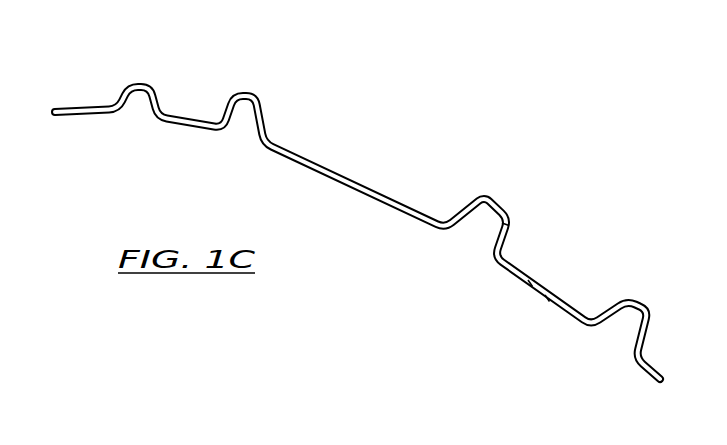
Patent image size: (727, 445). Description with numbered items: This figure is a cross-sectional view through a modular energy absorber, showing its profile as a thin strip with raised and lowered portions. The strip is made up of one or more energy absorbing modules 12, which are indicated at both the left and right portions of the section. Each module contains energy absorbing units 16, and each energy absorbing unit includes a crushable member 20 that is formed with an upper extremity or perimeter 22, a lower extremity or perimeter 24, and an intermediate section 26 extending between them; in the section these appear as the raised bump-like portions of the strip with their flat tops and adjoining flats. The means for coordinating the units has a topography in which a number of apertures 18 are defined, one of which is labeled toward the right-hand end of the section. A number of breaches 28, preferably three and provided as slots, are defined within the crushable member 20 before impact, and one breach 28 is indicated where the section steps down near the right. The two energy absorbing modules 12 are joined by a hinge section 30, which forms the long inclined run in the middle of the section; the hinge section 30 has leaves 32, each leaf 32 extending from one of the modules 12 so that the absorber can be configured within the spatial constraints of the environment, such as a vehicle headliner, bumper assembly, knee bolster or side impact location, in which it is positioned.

The energy absorbing module 12 is at (197, 160).
The energy absorbing unit 16 is at (266, 122).
The aperture 18 is at (546, 278).
The crushable member 20 is at (507, 187).
The upper extremity 22 is at (154, 91).
The lower extremity 24 is at (117, 106).
The intermediate section 26 is at (159, 107).
The breach 28 is at (511, 240).
The hinge section 30 is at (362, 178).
The leaf 32 is at (386, 202).